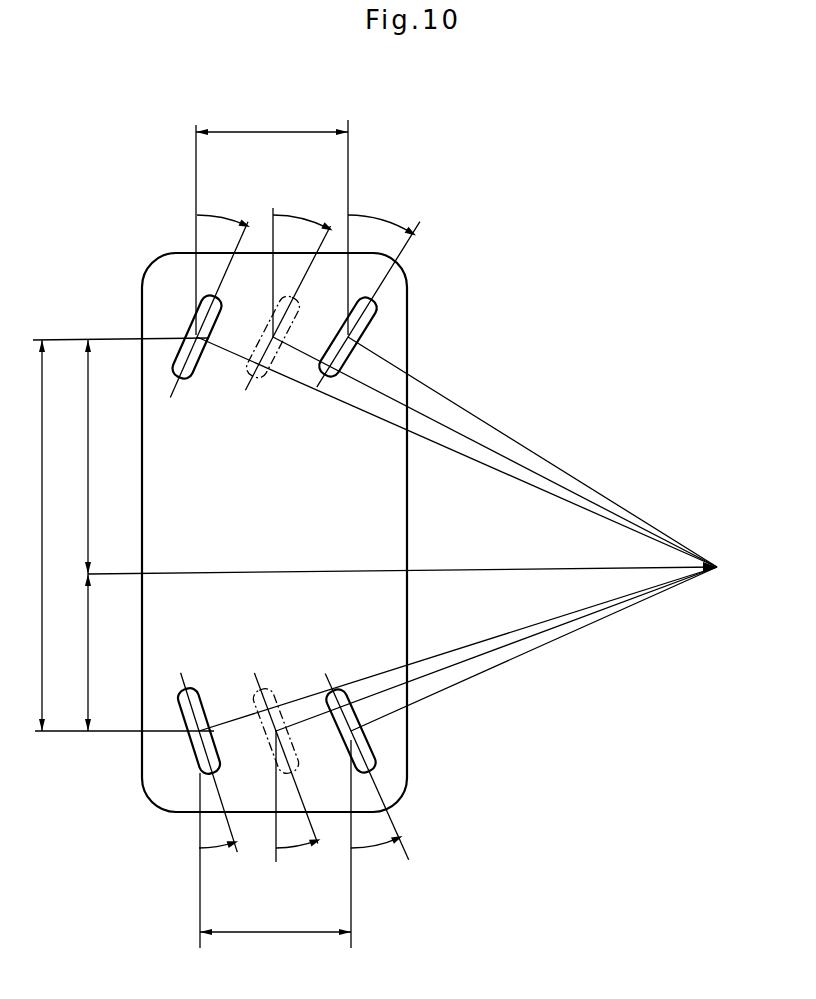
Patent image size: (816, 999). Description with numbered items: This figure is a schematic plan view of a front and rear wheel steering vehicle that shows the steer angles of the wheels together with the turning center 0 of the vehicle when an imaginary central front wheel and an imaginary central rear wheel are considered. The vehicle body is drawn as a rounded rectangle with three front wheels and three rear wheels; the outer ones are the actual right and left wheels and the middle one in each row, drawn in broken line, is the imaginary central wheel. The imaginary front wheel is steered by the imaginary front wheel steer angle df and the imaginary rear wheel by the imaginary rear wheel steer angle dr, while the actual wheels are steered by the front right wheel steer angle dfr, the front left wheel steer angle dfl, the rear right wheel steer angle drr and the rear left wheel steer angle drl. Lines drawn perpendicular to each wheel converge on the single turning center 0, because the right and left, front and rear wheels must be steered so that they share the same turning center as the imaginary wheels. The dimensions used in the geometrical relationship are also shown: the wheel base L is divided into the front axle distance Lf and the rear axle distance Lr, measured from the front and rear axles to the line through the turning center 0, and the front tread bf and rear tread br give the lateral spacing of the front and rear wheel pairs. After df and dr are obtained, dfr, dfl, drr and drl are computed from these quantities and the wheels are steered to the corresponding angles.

The turning center 0 is at (468, 534).
The wheel base L is at (50, 535).
The front axle distance Lf is at (97, 457).
The rear axle distance Lr is at (97, 652).
The front tread bf is at (272, 221).
The rear tread br is at (275, 848).
The front left wheel steer angle dfl is at (210, 294).
The imaginary front wheel steer angle df is at (287, 289).
The front right wheel steer angle dfr is at (368, 287).
The rear left wheel steer angle drl is at (207, 777).
The imaginary rear wheel steer angle dr is at (286, 776).
The rear right wheel steer angle drr is at (365, 776).